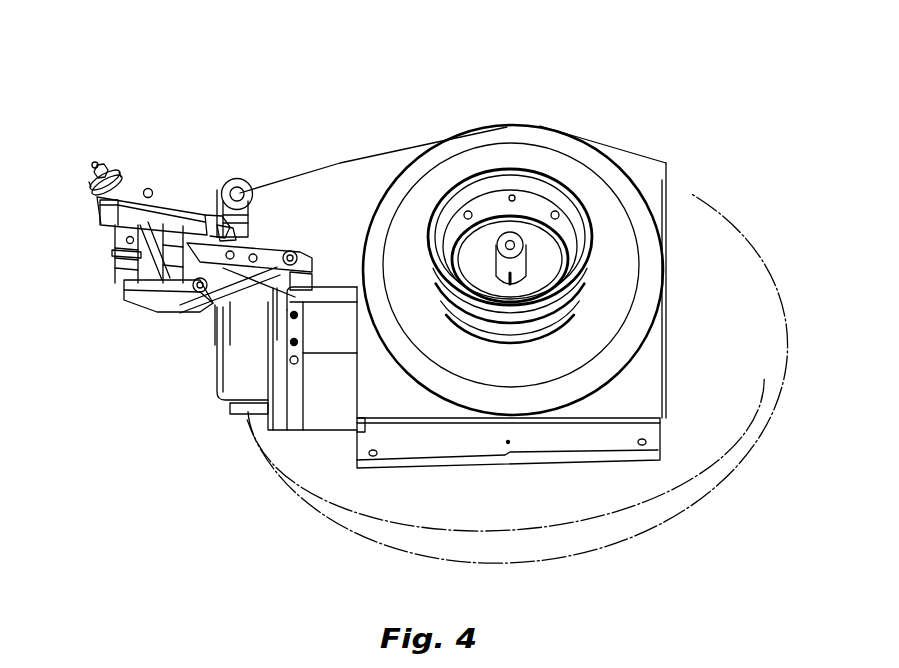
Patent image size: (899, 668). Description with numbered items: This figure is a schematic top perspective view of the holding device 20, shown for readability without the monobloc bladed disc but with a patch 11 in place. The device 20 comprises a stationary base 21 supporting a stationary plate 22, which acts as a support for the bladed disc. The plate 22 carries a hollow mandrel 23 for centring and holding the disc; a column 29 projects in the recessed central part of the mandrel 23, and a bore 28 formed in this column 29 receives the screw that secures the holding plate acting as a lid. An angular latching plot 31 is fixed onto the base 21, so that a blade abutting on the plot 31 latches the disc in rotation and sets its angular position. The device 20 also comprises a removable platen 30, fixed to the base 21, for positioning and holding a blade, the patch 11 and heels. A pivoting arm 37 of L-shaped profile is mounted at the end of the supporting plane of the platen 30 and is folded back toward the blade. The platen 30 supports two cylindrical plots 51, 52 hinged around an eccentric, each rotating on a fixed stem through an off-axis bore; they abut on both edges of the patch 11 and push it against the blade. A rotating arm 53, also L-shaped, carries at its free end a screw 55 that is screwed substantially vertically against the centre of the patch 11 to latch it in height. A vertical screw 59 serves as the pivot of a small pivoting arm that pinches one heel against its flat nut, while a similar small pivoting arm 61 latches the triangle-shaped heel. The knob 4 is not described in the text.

The holding device 20 is at (314, 92).
The base 21 is at (368, 180).
The plate 22 is at (525, 158).
The mandrel 23 is at (522, 266).
The bore 28 is at (505, 240).
The column 29 is at (565, 232).
The patch 11 is at (222, 380).
The platen 30 is at (150, 318).
The angular latching plot 31 is at (240, 179).
The pivoting arm 37 is at (169, 207).
The adjustment knob 4 is at (118, 172).
The vertical screw 59 is at (148, 188).
The screw 55 is at (186, 216).
The plot hinged around an eccentric 52 is at (128, 270).
The plot hinged around an eccentric 51 is at (176, 300).
The rotating arm 53 is at (148, 302).
The small pivoting arm 61 is at (296, 256).